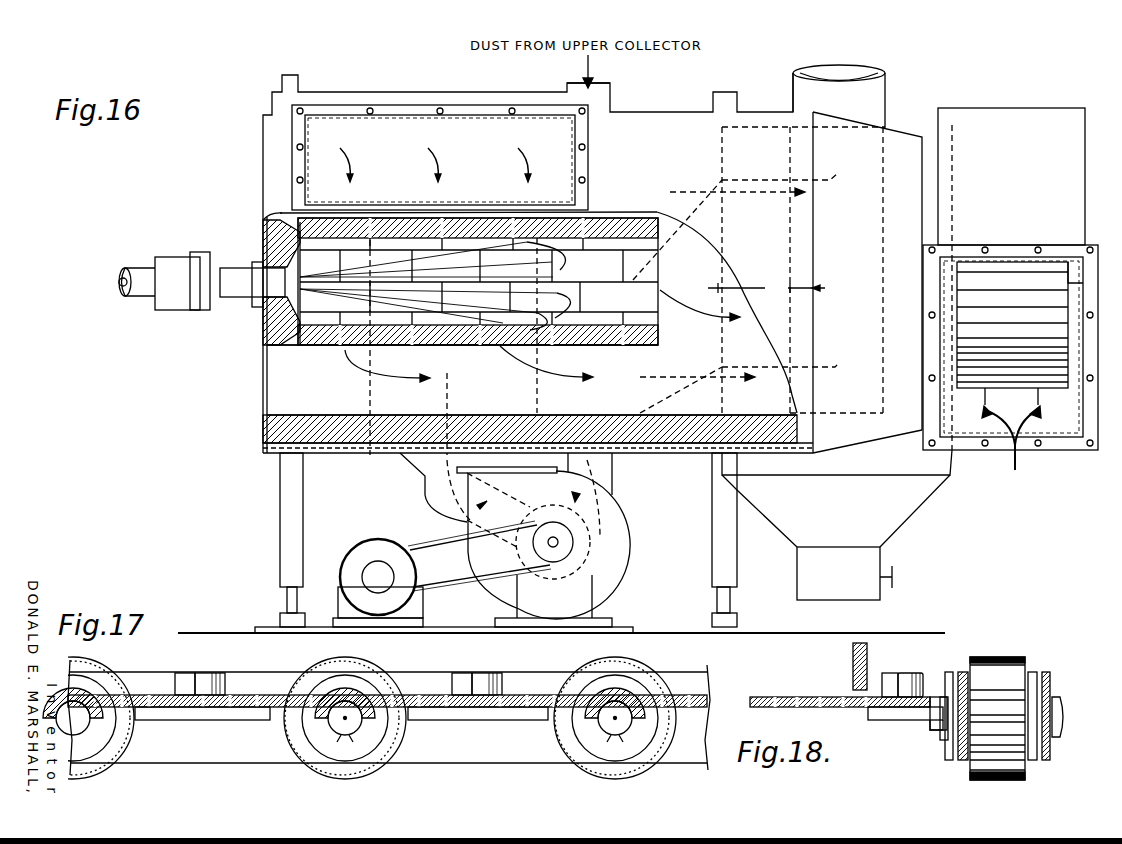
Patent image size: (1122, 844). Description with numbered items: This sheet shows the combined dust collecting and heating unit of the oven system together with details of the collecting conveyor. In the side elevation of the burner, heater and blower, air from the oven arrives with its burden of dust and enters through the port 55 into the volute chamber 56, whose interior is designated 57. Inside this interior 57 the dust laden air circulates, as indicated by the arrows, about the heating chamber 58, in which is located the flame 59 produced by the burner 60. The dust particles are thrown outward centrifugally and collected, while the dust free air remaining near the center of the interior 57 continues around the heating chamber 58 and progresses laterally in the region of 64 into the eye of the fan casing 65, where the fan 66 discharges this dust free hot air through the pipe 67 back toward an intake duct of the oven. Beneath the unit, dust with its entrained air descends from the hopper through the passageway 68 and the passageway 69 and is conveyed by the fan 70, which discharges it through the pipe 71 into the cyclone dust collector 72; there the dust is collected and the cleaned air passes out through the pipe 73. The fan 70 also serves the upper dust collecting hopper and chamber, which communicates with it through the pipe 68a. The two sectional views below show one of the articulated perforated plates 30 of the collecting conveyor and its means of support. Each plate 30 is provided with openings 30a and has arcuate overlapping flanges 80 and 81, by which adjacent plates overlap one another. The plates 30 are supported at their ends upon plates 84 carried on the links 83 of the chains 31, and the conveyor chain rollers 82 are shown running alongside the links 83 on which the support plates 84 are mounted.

In FIG. 16, the port 55 is at (325, 160).
In FIG. 16, the volute chamber 56 is at (263, 428).
In FIG. 16, the interior of the volute chamber 57 is at (283, 380).
In FIG. 16, the heating chamber 58 is at (425, 345).
In FIG. 16, the flame 59 is at (330, 300).
In FIG. 16, the burner 60 is at (209, 282).
In FIG. 16, the region of lateral air progression 64 is at (765, 330).
In FIG. 16, the fan casing 65 is at (1068, 239).
In FIG. 16, the fan 66 is at (1012, 282).
In FIG. 16, the pipe 67 is at (965, 262).
In FIG. 16, the passageway 68 is at (447, 503).
In FIG. 16, the pipe 68a is at (610, 90).
In FIG. 16, the passageway 69 is at (566, 519).
In FIG. 16, the fan 70 is at (612, 575).
In FIG. 16, the pipe 71 is at (648, 408).
In FIG. 16, the cyclone dust collector 72 is at (912, 505).
In FIG. 16, the pipe 73 is at (848, 104).
In FIG. 17, the perforated conveyor plate 30 is at (122, 695).
In FIG. 18, the perforated conveyor plate 30 is at (783, 697).
In FIG. 17, the openings 30a is at (255, 695).
In FIG. 18, the openings 30a is at (805, 697).
In FIG. 17, the chain 31 is at (531, 672).
In FIG. 17, the arcuate overlapping flange 80 is at (350, 690).
In FIG. 17, the arcuate overlapping flange 81 is at (362, 733).
In FIG. 17, the conveyor chain rollers 82 is at (90, 772).
In FIG. 18, the conveyor chain rollers 82 is at (998, 657).
In FIG. 17, the links 83 is at (463, 749).
In FIG. 18, the links 83 is at (950, 672).
In FIG. 17, the plates 84 is at (195, 715).
In FIG. 18, the plates 84 is at (892, 713).